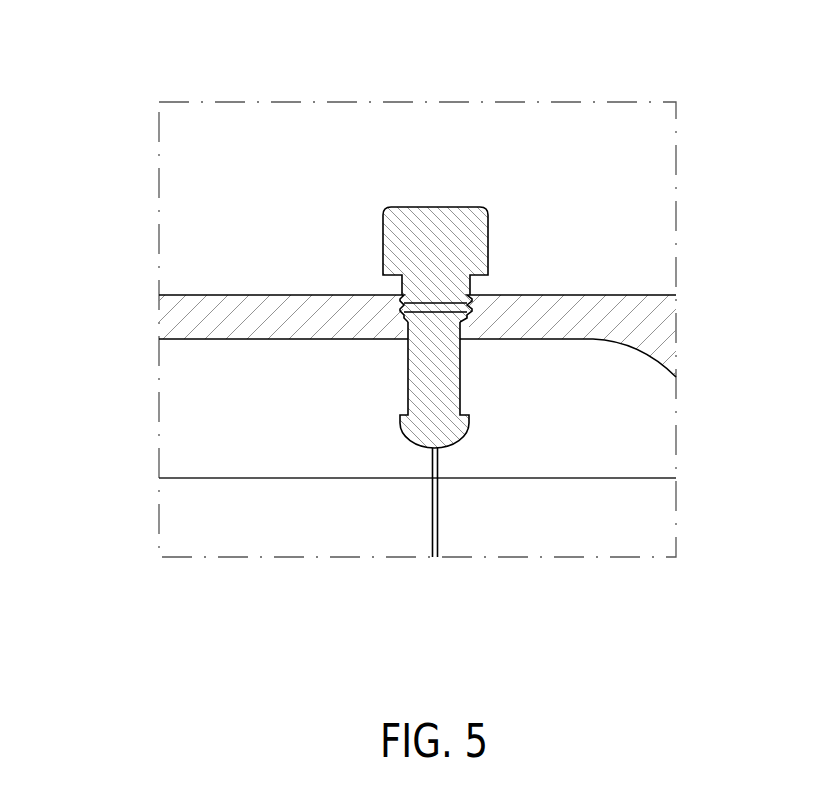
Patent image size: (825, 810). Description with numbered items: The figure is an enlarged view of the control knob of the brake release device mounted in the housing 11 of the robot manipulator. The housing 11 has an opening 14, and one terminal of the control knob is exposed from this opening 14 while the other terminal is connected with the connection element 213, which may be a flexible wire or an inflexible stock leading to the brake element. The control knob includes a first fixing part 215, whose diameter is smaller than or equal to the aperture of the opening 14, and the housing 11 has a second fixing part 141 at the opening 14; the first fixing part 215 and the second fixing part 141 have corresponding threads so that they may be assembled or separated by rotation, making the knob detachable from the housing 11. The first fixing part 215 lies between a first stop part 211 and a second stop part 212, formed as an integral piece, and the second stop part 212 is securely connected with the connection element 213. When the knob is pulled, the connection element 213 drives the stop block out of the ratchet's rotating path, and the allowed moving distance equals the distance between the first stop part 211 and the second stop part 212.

The housing 11 is at (645, 326).
The opening 14 is at (405, 335).
The second fixing part 141 is at (403, 317).
The first stop part 211 is at (445, 237).
The first fixing part 215 is at (433, 305).
The second stop part 212 is at (452, 437).
The connection element 213 is at (433, 516).